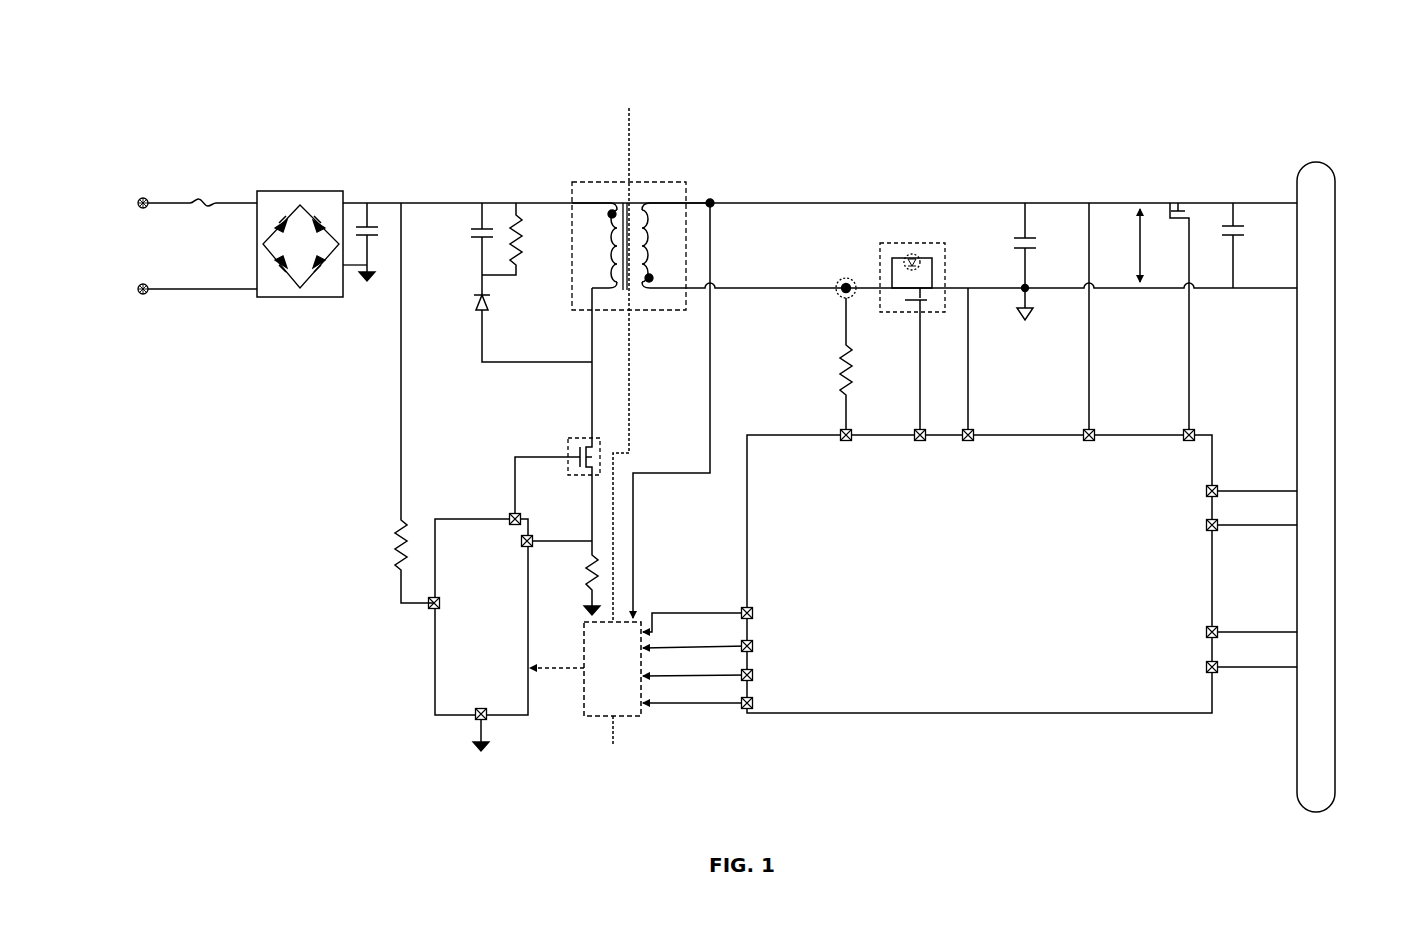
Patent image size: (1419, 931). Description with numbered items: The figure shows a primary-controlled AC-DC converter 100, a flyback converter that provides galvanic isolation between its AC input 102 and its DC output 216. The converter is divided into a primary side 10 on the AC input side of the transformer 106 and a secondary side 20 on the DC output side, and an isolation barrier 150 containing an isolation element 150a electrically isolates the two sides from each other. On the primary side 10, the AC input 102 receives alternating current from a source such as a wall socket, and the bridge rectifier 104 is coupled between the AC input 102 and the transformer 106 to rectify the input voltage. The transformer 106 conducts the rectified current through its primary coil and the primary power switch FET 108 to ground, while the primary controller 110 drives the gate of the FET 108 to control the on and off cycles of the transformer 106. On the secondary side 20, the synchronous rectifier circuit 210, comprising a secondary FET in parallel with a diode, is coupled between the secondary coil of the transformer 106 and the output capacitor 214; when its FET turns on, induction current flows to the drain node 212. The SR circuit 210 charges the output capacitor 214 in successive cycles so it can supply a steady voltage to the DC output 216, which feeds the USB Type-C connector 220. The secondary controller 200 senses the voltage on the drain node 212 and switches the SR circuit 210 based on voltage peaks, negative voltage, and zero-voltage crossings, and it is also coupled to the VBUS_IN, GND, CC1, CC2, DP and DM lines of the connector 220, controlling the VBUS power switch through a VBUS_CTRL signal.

The primary-controlled AC-DC converter 100 is at (836, 84).
The AC input 102 is at (186, 246).
The bridge rectifier 104 is at (289, 298).
The transformer 106 is at (665, 311).
The primary power switch field effect transistor 108 is at (568, 451).
The primary controller 110 is at (464, 477).
The isolation barrier 150 is at (636, 114).
The isolation element 150a is at (638, 671).
The primary side 10 is at (546, 155).
The secondary side 20 is at (722, 155).
The secondary controller 200 is at (1020, 458).
The synchronous rectifier circuit 210 is at (880, 256).
The drain node 212 is at (834, 295).
The output capacitor 214 is at (1012, 243).
The DC output 216 is at (1120, 245).
The USB Type-C connector 220 is at (1341, 249).